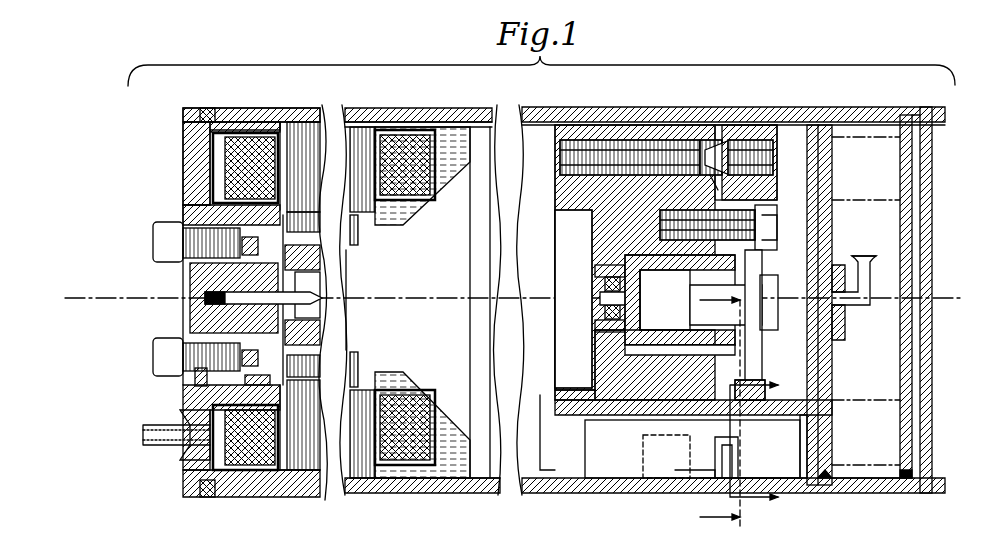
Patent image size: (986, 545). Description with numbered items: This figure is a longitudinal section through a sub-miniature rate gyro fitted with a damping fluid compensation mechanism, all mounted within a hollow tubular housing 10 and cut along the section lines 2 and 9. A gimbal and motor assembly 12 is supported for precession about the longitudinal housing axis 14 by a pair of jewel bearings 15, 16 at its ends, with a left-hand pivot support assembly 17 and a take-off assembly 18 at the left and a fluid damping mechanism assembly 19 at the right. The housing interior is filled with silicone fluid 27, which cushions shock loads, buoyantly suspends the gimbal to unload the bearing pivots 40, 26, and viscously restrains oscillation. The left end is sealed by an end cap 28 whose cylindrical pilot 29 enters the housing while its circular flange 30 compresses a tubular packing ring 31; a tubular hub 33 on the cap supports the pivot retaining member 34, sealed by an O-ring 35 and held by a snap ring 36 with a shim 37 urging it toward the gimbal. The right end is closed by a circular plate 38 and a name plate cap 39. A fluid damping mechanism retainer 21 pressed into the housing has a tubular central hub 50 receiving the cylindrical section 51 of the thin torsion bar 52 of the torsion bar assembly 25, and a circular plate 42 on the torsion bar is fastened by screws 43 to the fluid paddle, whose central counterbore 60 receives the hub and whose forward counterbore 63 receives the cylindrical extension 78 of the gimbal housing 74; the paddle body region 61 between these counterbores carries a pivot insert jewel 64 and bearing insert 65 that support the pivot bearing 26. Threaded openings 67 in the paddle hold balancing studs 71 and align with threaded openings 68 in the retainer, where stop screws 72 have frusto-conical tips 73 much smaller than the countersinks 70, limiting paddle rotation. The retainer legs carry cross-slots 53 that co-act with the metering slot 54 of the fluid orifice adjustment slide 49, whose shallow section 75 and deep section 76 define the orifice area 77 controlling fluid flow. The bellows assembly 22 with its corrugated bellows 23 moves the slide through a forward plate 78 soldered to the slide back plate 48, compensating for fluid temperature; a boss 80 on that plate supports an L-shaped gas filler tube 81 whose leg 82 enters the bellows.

The section line 2- 2 is at (720, 408).
The section line 9- 9 is at (761, 440).
The hollow tubular housing 10 is at (565, 492).
The gimbal and motor assembly 12 is at (466, 492).
The longitudinal housing axis 14 is at (435, 300).
The jewel bearing 15 is at (285, 318).
The jewel bearing 16 is at (606, 340).
The left-hand pivot support assembly 17 is at (188, 317).
The take-off assembly 18 is at (183, 478).
The fluid damping mechanism assembly 19 is at (612, 125).
The fluid damping mechanism retainer 21 is at (770, 404).
The bellows assembly 22 is at (848, 490).
The corrugated bellows 23 is at (872, 478).
The torsion bar assembly 25 is at (760, 267).
The pivot bearing 26 is at (600, 298).
The silicone fluid 27 is at (450, 160).
The end cap 28 is at (195, 140).
The cylindrical pilot 29 is at (240, 480).
The circular flange 30 is at (183, 490).
The tubular packing ring 31 is at (206, 108).
The tubular hub 33 is at (215, 205).
The pivot retaining member 34 is at (190, 282).
The O-ring 35 is at (272, 385).
The snap ring 36 is at (183, 378).
The shim 37 is at (207, 375).
The circular plate 38 is at (900, 435).
The name plate cap 39 is at (932, 400).
The bearing pivot 40 is at (332, 300).
The circular plate 42 is at (760, 353).
The screws 43 is at (770, 238).
The back plate 48 is at (812, 440).
The fluid orifice adjustment slide 49 is at (822, 478).
The tubular central hub 50 is at (648, 345).
The cylindrical section 51 is at (665, 300).
The torsion bar 52 is at (700, 298).
The cross-slot 53 is at (643, 447).
The metering slot 54 is at (760, 498).
The central counterbore 60 is at (680, 300).
The gear housing 61 is at (605, 250).
The counterbore 63 is at (585, 397).
The pivot insert jewel 64 is at (595, 275).
The bearing insert 65 is at (600, 318).
The threaded opening 67 is at (708, 140).
The internally threaded opening 68 is at (775, 150).
The frusto-conical countersink 70 is at (725, 130).
The stud 71 is at (570, 160).
The stop screw 72 is at (770, 162).
The frusto-conical tip 73 is at (712, 165).
The gimbal housing 74 is at (545, 470).
The shallow section 75 is at (700, 478).
The deep section 76 is at (736, 446).
The orifice area 77 is at (680, 470).
The forward plate 78 is at (572, 225).
The boss 80 is at (845, 262).
The gas filler tube 81 is at (856, 305).
The leg 82 is at (870, 290).